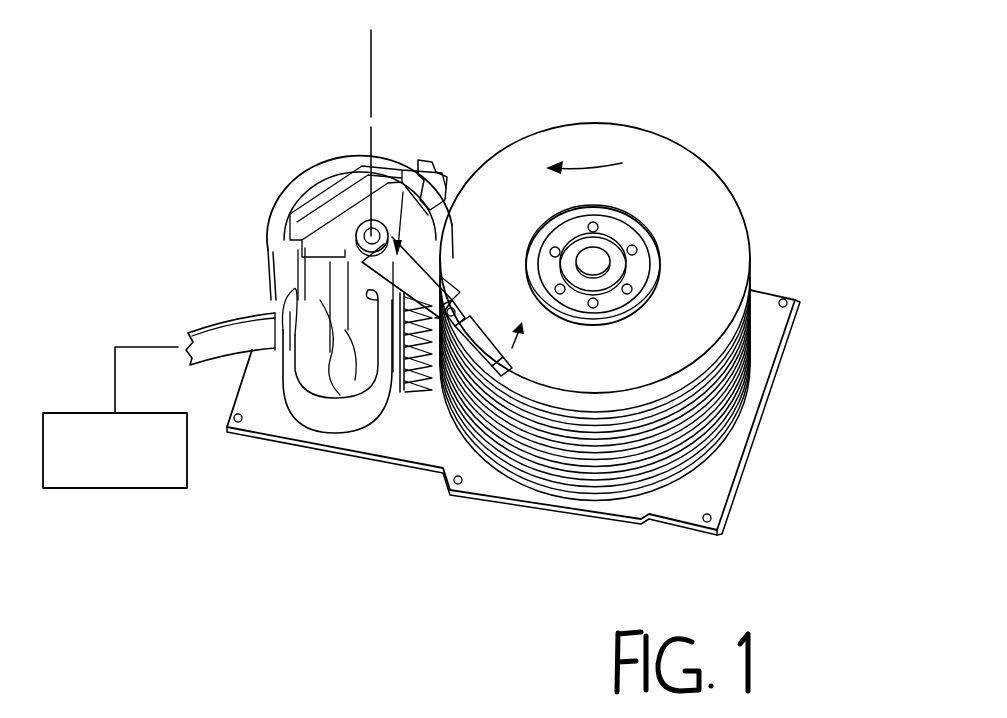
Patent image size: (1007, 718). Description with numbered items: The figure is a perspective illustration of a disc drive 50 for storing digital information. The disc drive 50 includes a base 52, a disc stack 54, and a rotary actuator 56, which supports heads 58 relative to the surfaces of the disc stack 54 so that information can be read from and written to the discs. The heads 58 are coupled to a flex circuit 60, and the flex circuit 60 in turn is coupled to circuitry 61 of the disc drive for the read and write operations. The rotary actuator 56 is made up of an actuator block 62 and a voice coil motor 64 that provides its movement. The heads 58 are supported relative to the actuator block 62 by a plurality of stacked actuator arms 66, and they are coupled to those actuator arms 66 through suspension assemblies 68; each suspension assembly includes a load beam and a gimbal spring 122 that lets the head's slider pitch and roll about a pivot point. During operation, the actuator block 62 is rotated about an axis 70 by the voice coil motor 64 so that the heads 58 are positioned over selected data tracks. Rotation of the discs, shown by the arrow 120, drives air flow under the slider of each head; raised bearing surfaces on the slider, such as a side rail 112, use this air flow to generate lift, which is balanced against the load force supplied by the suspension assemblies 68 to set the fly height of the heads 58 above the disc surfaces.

The disc drive 50 is at (752, 190).
The base 52 is at (770, 322).
The disc stack 54 is at (668, 168).
The rotary actuator 56 is at (421, 162).
The heads 58 is at (488, 367).
The flex circuit 60 is at (343, 410).
The circuitry 61 is at (170, 496).
The actuator block 62 is at (442, 221).
The voice coil motor 64 is at (325, 152).
The actuator arms 66 is at (446, 262).
The suspension assemblies 68 is at (470, 323).
The axis 70 is at (371, 52).
The side rail 112 is at (512, 348).
The arrow 120 is at (591, 162).
The gimbal spring 122 is at (661, 263).